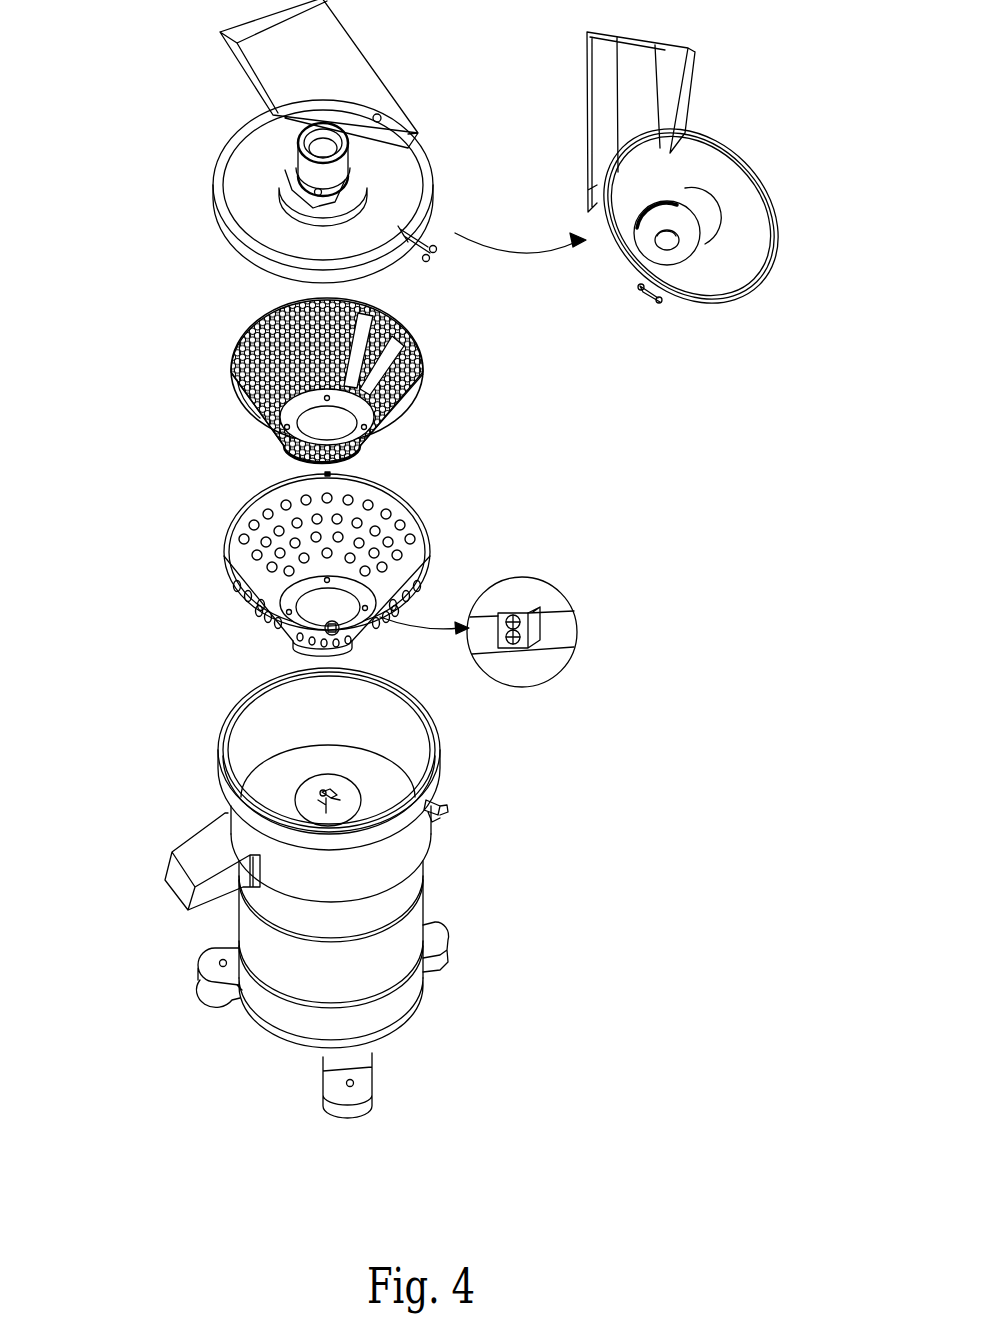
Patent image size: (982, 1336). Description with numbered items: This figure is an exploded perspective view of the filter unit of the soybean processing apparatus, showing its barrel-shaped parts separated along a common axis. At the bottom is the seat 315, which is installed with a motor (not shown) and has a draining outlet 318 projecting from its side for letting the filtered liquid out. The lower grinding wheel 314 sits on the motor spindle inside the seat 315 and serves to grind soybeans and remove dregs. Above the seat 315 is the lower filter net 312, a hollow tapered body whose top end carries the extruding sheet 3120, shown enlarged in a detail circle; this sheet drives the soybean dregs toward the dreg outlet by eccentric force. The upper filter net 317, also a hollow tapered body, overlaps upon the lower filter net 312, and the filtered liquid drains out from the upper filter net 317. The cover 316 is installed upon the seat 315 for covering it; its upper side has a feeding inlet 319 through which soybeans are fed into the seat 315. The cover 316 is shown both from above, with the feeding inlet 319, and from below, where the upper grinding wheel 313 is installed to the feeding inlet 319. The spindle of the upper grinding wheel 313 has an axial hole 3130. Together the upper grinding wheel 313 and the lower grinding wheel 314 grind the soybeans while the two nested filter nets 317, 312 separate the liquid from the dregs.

The lower filter net 312 is at (252, 540).
The extruding sheet 3120 is at (535, 623).
The upper grinding wheel 313 is at (687, 255).
The axial hole 3130 is at (672, 247).
The lower grinding wheel 314 is at (348, 802).
The seat 315 is at (405, 850).
The cover 316 is at (722, 155).
The upper filter net 317 is at (250, 362).
The draining outlet 318 is at (178, 878).
The feeding inlet 319 is at (297, 143).